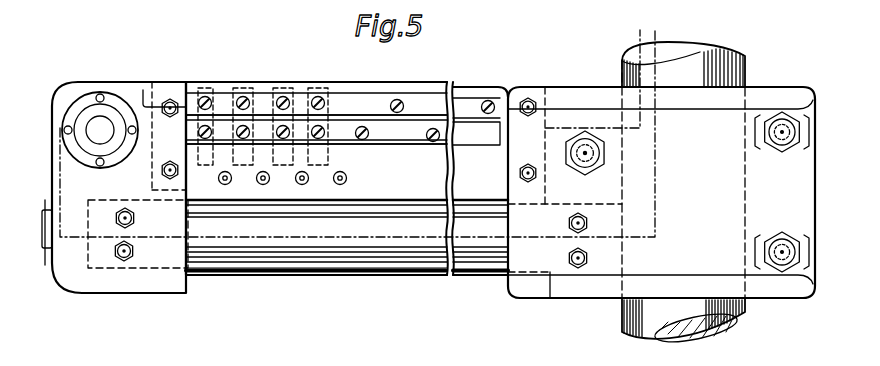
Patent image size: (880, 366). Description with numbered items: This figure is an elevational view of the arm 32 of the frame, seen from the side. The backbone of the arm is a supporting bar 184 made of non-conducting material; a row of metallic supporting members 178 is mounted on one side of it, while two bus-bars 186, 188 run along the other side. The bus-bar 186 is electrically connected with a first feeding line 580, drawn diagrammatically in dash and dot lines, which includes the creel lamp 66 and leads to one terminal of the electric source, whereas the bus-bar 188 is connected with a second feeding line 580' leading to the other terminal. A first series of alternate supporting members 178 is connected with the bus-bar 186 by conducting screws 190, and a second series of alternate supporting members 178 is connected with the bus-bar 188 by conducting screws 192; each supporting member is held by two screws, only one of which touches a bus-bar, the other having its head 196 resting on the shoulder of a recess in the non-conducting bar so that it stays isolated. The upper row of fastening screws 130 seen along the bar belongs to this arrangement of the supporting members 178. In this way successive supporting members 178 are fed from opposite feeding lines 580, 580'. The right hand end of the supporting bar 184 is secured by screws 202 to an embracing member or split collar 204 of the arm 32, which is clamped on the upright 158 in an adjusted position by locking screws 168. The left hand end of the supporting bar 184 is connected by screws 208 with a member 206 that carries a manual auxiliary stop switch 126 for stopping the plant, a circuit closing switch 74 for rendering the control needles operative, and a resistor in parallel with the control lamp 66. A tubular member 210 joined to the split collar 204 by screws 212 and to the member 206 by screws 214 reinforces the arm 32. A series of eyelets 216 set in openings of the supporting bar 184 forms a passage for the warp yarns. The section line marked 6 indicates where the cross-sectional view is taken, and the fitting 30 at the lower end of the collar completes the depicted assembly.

The section line 6- 6 is at (372, 60).
The threaded fitting face 30 is at (750, 320).
The arm 32 is at (408, 278).
The creel lamp 66 is at (100, 130).
The circuit closing switch 74 is at (45, 205).
The manual auxiliary stop switch 126 is at (52, 250).
The terminal screws 130 is at (316, 98).
The upright 158 is at (745, 66).
The locking screws 168 is at (586, 176).
The supporting members 178 is at (283, 88).
The supporting bar 184 is at (472, 97).
The bus-bar 186 is at (343, 102).
The bus-bar 188 is at (386, 143).
The screws 190 is at (400, 107).
The screws 192 is at (433, 143).
The head 196 is at (320, 140).
The screws 202 is at (528, 98).
The split collar 204 is at (655, 262).
The member 206 is at (114, 82).
The screws 208 is at (170, 118).
The tubular member 210 is at (233, 266).
The screws 212 is at (586, 250).
The screws 214 is at (135, 218).
The eyelets 216 is at (340, 186).
The first feeding line 580 is at (379, 164).
The second feeding line 580' is at (592, 79).